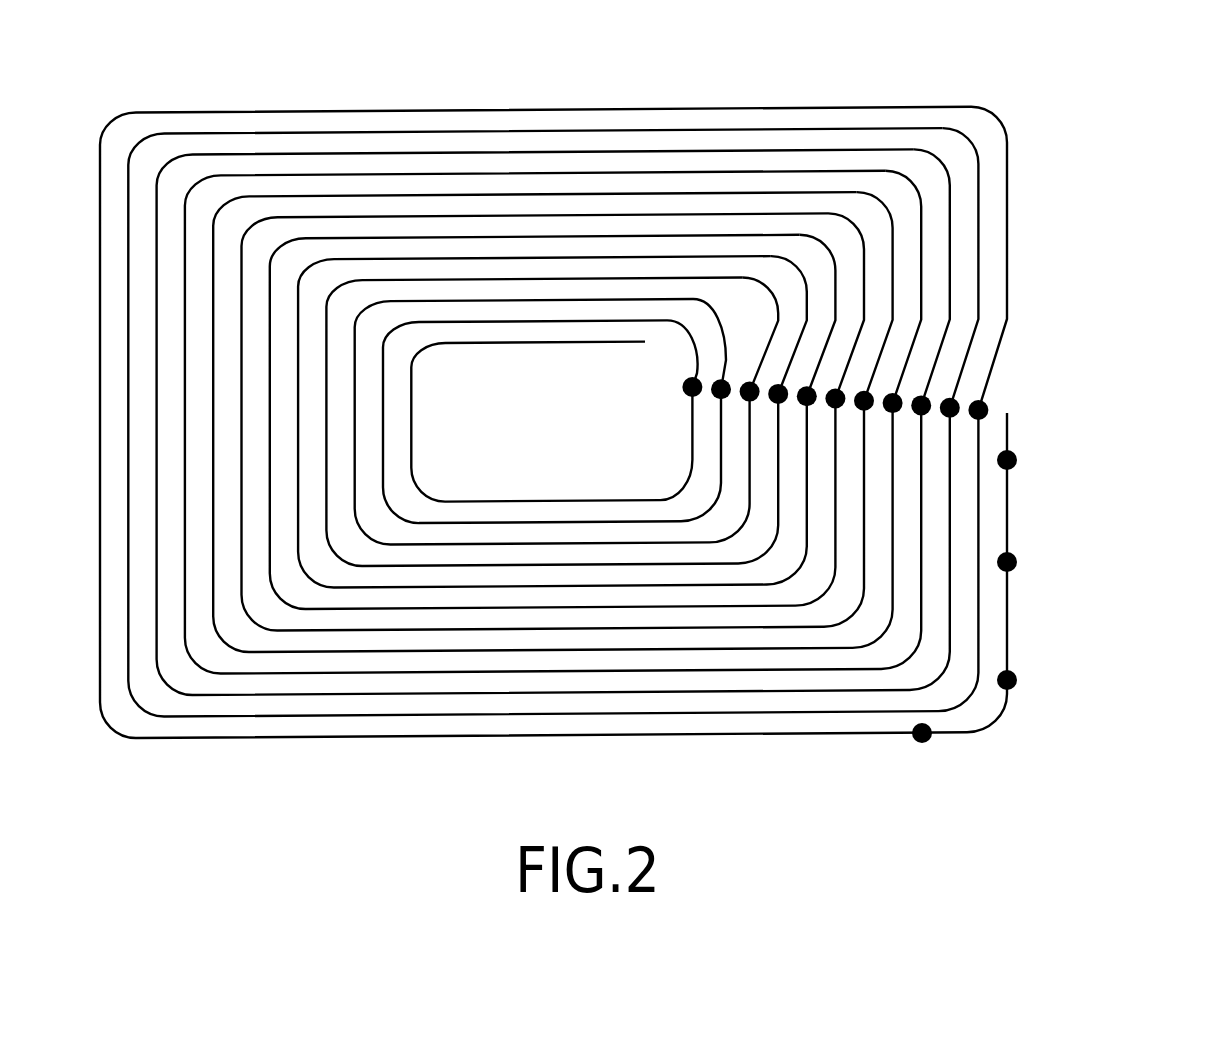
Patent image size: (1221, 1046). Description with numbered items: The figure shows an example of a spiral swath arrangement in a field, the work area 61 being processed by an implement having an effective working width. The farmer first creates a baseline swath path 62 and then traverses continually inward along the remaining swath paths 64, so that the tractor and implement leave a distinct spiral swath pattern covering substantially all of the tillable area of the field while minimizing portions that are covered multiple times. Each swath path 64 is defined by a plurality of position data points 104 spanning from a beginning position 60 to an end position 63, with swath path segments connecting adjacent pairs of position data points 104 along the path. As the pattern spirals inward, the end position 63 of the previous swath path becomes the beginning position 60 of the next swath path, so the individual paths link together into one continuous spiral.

The beginning position 60 is at (1010, 502).
The work area 61 is at (1044, 137).
The baseline swath path 62 is at (1010, 612).
The end position 63 is at (872, 395).
The swath path 64 is at (690, 250).
The position data points 104 is at (1015, 455).